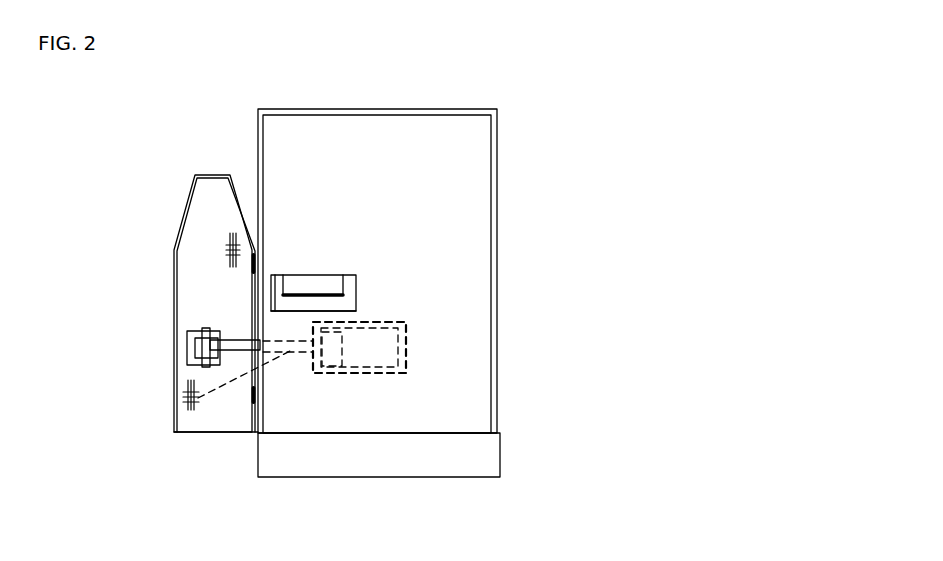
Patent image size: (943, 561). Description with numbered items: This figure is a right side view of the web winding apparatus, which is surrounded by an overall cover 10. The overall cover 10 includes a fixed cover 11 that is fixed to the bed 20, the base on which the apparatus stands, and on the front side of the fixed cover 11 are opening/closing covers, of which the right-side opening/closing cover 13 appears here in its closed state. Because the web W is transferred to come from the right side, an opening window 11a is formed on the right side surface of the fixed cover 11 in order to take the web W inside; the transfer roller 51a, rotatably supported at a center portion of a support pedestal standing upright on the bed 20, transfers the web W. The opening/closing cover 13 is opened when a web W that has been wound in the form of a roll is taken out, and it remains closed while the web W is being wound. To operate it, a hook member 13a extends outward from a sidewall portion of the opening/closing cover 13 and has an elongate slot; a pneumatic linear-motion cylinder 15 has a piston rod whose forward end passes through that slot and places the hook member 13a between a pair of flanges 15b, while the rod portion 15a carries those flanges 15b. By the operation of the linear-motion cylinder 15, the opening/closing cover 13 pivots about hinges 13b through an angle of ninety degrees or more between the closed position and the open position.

The overall cover 10 is at (497, 151).
The fixed cover 11 is at (258, 145).
The opening window 11a is at (345, 311).
The opening/closing cover 13 is at (176, 235).
The hook member 13a is at (188, 340).
The hinge 13b is at (258, 263).
The pneumatic linear-motion cylinder 15 is at (362, 373).
The arm 15a is at (242, 352).
The flange 15b is at (204, 367).
The bed 20 is at (500, 447).
The transfer roller 51a is at (320, 283).
The web W is at (303, 296).